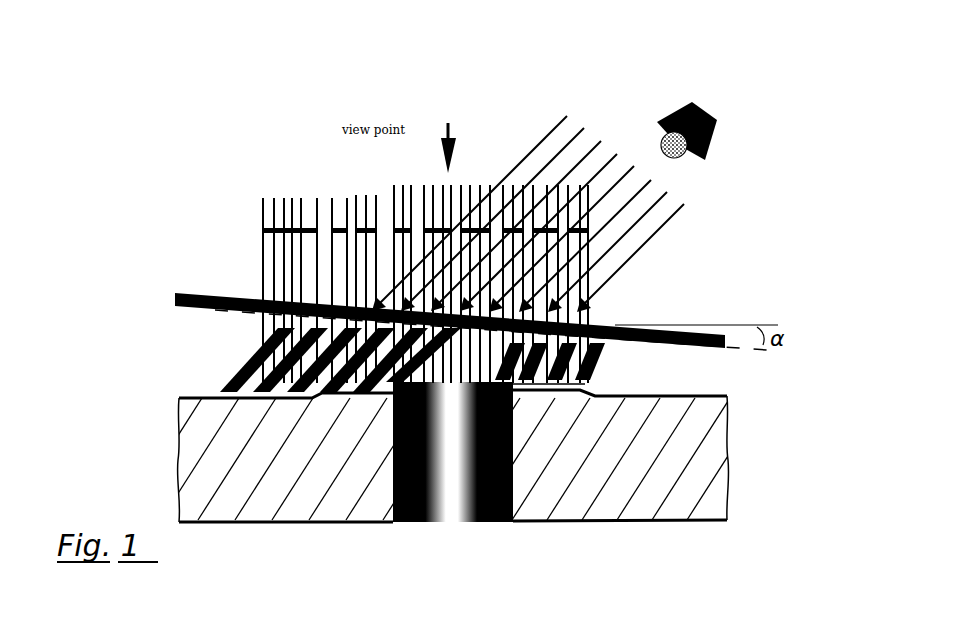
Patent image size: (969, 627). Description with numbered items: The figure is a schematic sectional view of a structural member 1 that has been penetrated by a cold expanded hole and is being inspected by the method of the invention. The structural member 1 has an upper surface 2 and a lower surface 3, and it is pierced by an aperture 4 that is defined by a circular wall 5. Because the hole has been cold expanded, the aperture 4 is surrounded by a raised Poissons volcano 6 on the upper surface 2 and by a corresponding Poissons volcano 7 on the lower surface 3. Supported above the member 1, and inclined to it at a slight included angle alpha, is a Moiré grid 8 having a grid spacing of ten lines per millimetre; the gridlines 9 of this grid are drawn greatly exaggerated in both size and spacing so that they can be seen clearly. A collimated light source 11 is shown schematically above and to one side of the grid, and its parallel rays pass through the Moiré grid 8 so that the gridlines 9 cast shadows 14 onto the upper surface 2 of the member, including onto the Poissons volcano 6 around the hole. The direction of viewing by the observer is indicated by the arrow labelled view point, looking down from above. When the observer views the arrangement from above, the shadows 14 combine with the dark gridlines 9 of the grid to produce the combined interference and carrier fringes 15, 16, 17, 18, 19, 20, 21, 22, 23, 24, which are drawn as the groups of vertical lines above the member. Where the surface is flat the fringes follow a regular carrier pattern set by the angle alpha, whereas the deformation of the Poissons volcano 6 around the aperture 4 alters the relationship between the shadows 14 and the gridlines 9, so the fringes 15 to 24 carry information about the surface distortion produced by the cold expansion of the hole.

The structural member 1 is at (727, 478).
The upper surface 2 is at (716, 395).
The lower surface 3 is at (673, 521).
The aperture 4 is at (450, 495).
The circular wall 5 is at (443, 478).
The Poissons volcano 6 is at (513, 388).
The Poissons volcano 7 is at (558, 522).
The Moiré grid 8 is at (607, 322).
The gridlines 9 is at (213, 311).
The collimated light source 11 is at (660, 123).
The shadows 14 is at (220, 373).
The combined interference and carrier fringes 15 is at (275, 224).
The combined interference and carrier fringes 16 is at (342, 226).
The combined interference and carrier fringes 17 is at (377, 226).
The combined interference and carrier fringes 18 is at (405, 226).
The combined interference and carrier fringes 19 is at (423, 192).
The combined interference and carrier fringes 20 is at (459, 226).
The combined interference and carrier fringes 21 is at (491, 226).
The combined interference and carrier fringes 22 is at (525, 222).
The combined interference and carrier fringes 23 is at (543, 218).
The combined interference and carrier fringes 24 is at (577, 226).